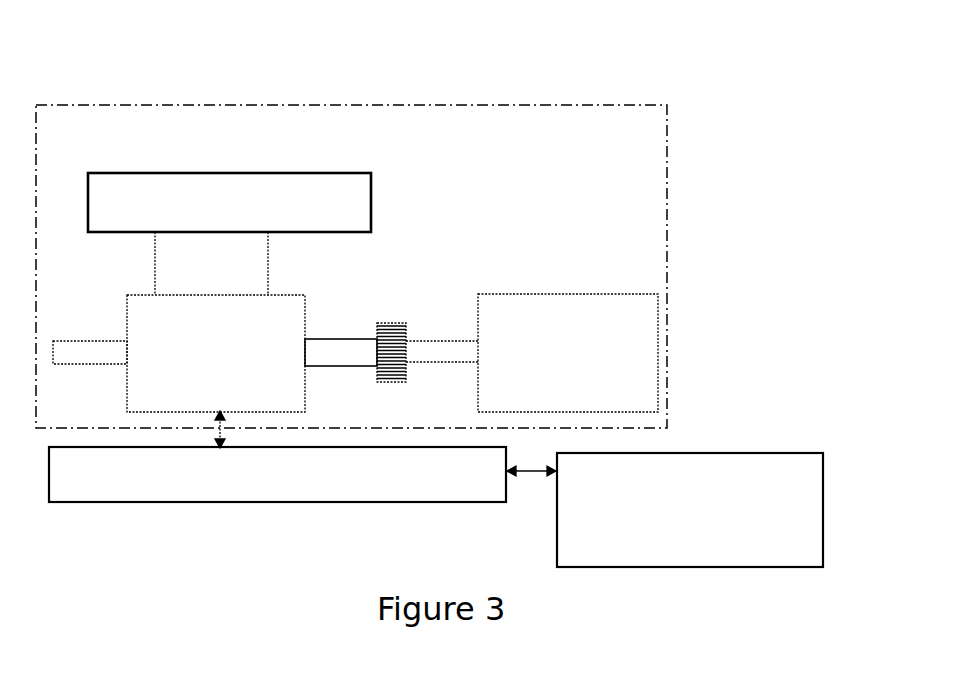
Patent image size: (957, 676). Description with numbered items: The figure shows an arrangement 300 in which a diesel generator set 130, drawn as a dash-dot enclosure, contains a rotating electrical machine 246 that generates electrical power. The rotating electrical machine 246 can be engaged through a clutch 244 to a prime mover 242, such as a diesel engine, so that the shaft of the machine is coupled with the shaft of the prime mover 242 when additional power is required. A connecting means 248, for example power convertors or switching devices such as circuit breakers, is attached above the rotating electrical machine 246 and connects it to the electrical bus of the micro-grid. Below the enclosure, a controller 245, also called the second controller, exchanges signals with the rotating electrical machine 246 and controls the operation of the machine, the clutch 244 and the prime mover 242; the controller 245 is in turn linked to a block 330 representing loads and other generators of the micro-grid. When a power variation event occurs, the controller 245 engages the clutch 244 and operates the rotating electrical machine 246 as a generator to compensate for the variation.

The power system 300 is at (849, 59).
The diesel generator set 130 is at (617, 106).
The connecting means 248 is at (312, 173).
The rotating electrical machine 246 is at (290, 291).
The clutch 244 is at (388, 313).
The prime mover 242 is at (552, 291).
The controller 245 is at (366, 514).
The loads / other generators 330 is at (703, 447).